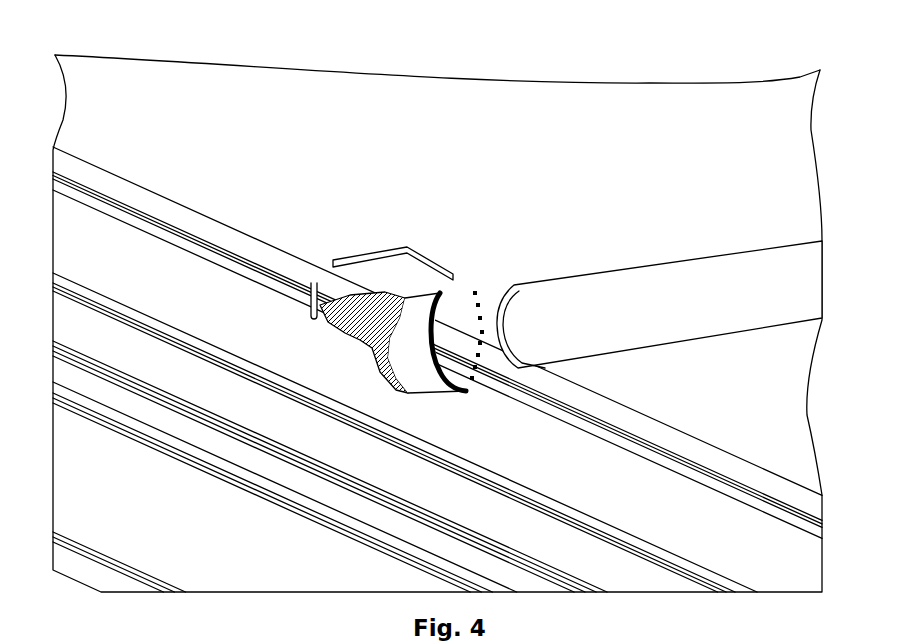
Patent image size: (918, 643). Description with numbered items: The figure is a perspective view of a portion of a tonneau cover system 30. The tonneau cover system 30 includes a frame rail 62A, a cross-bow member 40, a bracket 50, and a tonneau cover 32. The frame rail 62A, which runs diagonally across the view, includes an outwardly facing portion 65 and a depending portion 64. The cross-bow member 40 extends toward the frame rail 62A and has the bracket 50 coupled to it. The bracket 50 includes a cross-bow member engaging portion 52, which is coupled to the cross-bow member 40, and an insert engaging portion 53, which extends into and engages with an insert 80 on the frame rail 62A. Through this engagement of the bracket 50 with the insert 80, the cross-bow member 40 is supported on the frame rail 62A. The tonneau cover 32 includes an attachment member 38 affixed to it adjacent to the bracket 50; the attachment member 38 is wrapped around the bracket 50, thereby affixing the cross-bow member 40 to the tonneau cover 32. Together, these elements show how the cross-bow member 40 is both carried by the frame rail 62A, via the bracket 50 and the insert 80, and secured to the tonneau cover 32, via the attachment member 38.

The tonneau cover system 30 is at (687, 69).
The tonneau cover 32 is at (236, 170).
The attachment member 38 is at (439, 327).
The cross-bow member 40 is at (624, 347).
The bracket 50 is at (507, 275).
The cross-bow member engaging portion 52 is at (437, 386).
The insert engaging portion 53 is at (340, 322).
The frame rail 62A is at (108, 253).
The depending portion 64 is at (612, 498).
The outwardly facing portion 65 is at (688, 468).
The insert 80 is at (311, 299).